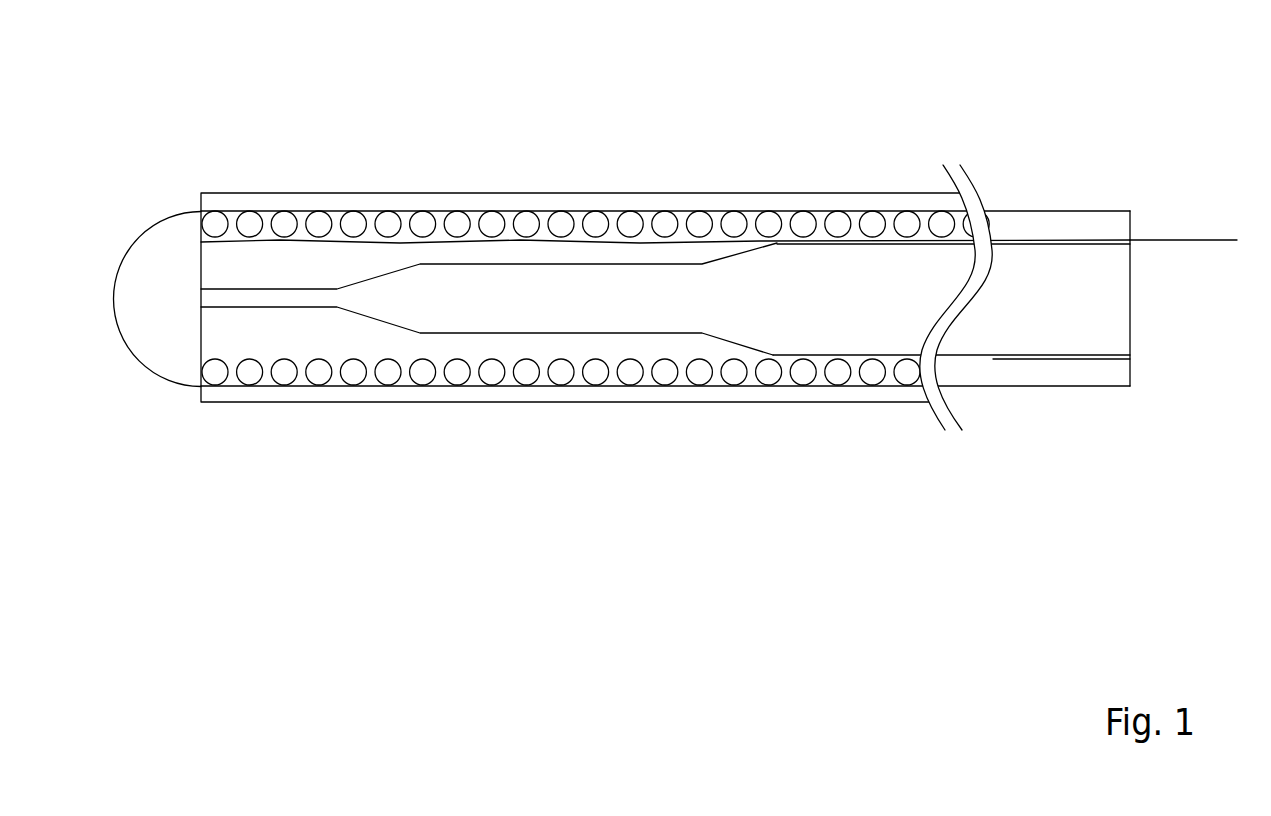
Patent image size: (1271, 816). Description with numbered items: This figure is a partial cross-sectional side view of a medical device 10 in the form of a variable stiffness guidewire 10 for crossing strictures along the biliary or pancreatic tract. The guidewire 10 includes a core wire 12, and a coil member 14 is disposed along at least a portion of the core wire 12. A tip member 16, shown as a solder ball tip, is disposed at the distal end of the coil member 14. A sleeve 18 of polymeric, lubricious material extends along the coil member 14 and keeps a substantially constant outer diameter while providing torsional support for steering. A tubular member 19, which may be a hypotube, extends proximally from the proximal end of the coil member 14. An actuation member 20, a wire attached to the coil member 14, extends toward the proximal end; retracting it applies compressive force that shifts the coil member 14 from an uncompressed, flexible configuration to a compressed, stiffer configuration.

The guidewire 10 is at (142, 105).
The core wire 12 is at (508, 317).
The coil member 14 is at (492, 224).
The tip member 16 is at (150, 348).
The sleeve 18 is at (302, 203).
The tubular member 19 is at (1057, 212).
The actuation member 20 is at (1175, 240).